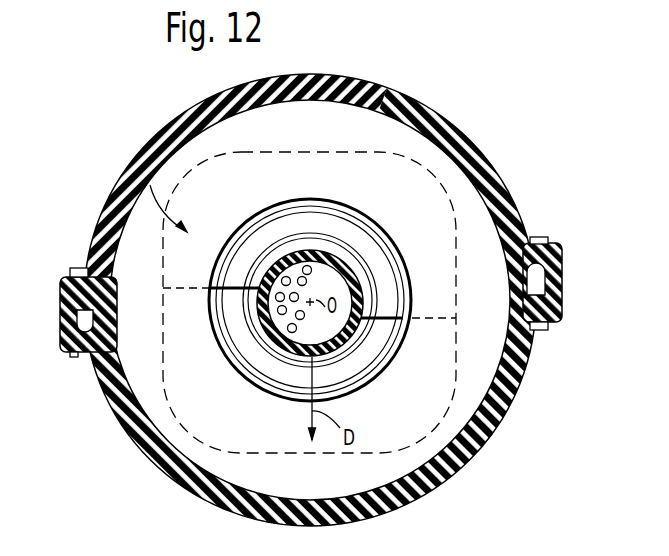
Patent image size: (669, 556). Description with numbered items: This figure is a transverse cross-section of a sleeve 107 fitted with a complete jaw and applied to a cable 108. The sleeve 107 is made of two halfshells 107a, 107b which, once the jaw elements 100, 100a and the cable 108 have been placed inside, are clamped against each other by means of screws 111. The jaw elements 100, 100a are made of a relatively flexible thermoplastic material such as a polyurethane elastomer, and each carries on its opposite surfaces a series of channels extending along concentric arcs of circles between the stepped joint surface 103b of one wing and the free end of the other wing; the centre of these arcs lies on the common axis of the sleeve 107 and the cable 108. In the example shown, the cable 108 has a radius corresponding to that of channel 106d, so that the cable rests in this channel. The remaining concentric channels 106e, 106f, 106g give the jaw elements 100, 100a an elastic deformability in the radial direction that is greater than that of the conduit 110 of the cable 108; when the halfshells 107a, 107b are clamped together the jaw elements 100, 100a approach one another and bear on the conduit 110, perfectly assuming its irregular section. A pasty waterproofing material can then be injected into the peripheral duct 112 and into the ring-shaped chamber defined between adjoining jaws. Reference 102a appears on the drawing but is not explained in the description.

The jaw element 100 is at (30, 0).
The jaw element 100a is at (150, 185).
The cut line of bearing 102a is at (212, 278).
The stepped joint surface 103b is at (395, 312).
The channel 106d is at (357, 243).
The channel 106e is at (248, 333).
The channel 106f is at (330, 217).
The channel 106g is at (263, 212).
The sleeve 107 is at (437, 112).
The halfshell 107a is at (478, 157).
The halfshell 107b is at (472, 458).
The cable 108 is at (406, 270).
The conduit 110 is at (352, 333).
The screw 111 is at (72, 268).
The peripheral duct 112 is at (560, 289).